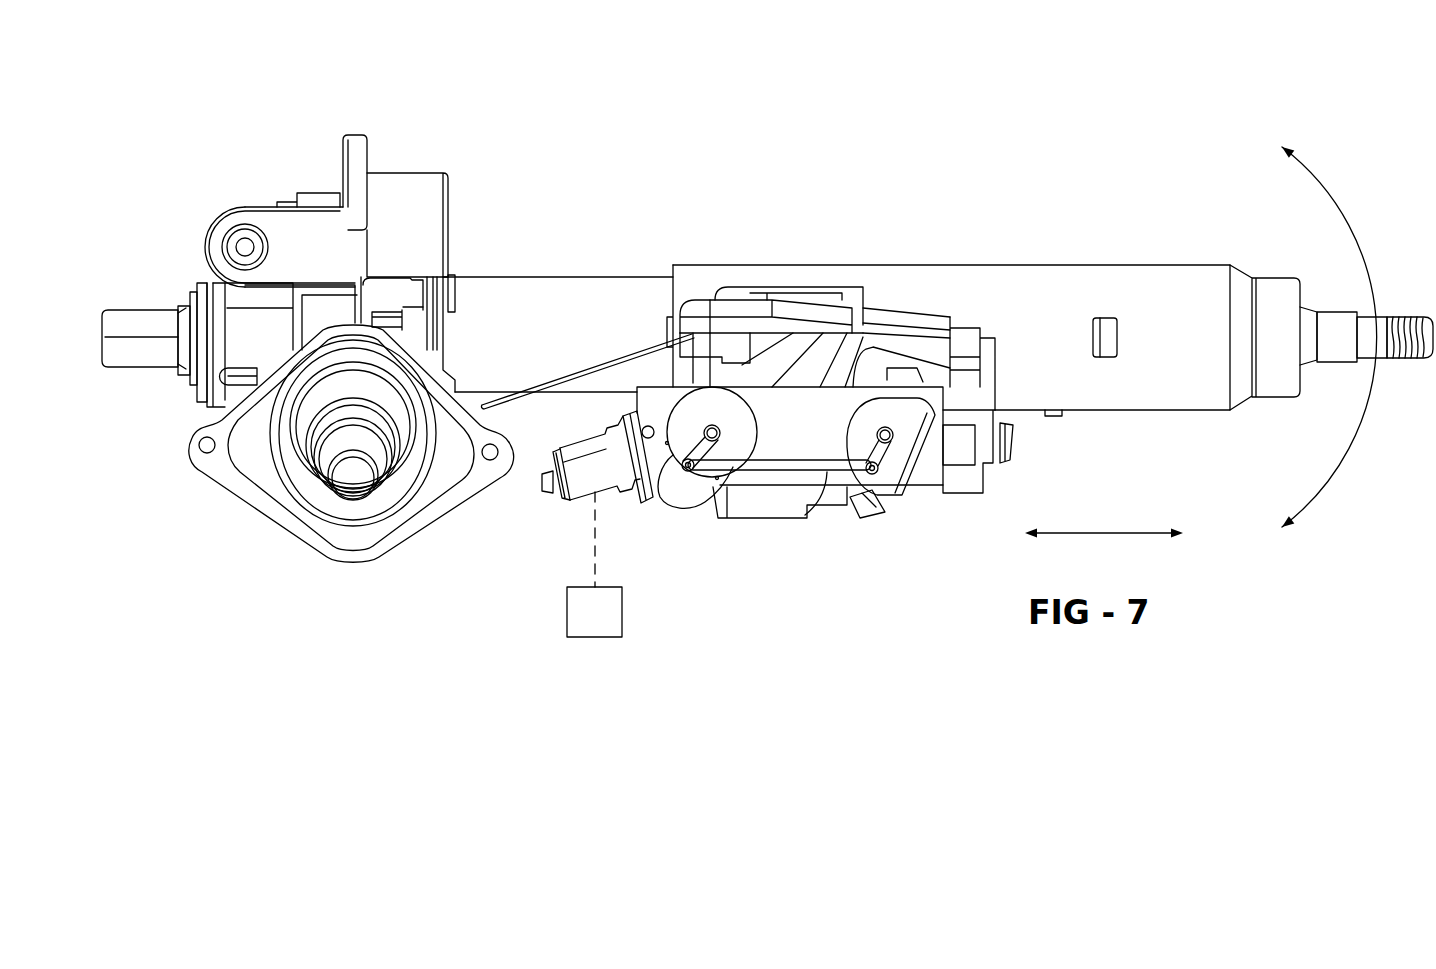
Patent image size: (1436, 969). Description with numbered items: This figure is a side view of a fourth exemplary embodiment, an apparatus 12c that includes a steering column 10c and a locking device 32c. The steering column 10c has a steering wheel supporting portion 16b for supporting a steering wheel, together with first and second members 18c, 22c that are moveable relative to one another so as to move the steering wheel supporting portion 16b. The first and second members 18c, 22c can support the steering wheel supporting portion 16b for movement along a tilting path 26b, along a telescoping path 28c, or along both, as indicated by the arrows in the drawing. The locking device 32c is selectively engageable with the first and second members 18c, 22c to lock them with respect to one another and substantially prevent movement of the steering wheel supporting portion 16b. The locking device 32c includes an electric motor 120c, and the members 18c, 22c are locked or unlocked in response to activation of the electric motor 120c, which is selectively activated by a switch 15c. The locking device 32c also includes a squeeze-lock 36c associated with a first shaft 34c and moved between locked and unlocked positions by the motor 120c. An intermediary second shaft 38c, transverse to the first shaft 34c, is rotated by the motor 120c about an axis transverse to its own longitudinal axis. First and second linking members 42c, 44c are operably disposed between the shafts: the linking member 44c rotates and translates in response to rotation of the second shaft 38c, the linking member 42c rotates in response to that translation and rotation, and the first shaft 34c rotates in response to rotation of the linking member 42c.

The steering column 10c is at (769, 339).
The apparatus 12c is at (1051, 309).
The switch 15c is at (611, 622).
The steering shaft 16b is at (1406, 370).
The first member 18c is at (1198, 283).
The second member 22c is at (532, 298).
The tilt direction arrow 26b is at (1353, 442).
The telescoping path 28c is at (1113, 533).
The locking device 32c is at (825, 429).
The first shaft 34c is at (885, 435).
The squeeze-lock 36c is at (893, 556).
The second shaft 38c is at (697, 500).
The first linking member 42c is at (905, 495).
The second linking member 44c is at (827, 472).
The electric motor 120c is at (550, 495).